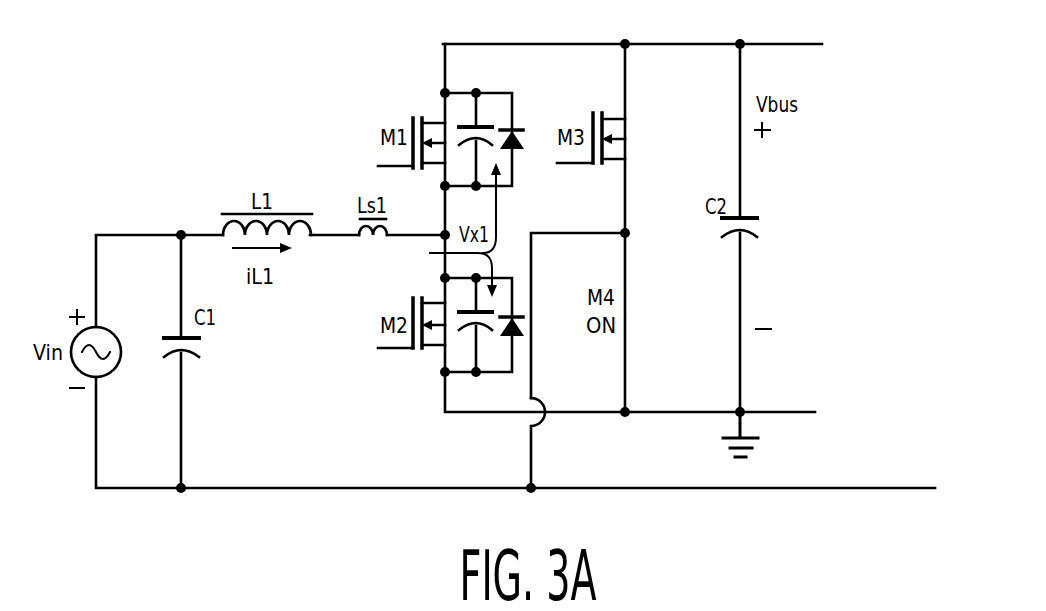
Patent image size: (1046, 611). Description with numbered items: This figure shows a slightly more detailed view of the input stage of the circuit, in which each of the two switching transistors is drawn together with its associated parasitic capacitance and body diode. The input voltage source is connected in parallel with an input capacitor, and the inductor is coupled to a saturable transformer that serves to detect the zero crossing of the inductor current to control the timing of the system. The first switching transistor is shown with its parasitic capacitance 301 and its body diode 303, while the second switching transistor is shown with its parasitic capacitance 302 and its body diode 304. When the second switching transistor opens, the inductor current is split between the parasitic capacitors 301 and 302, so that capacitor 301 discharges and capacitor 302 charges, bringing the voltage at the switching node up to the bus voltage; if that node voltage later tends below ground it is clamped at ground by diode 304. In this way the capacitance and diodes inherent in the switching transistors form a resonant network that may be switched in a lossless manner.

The parasitic capacitance 301 is at (462, 128).
The parasitic capacitance 302 is at (470, 330).
The body diode 303 is at (517, 135).
The body diode 304 is at (520, 328).